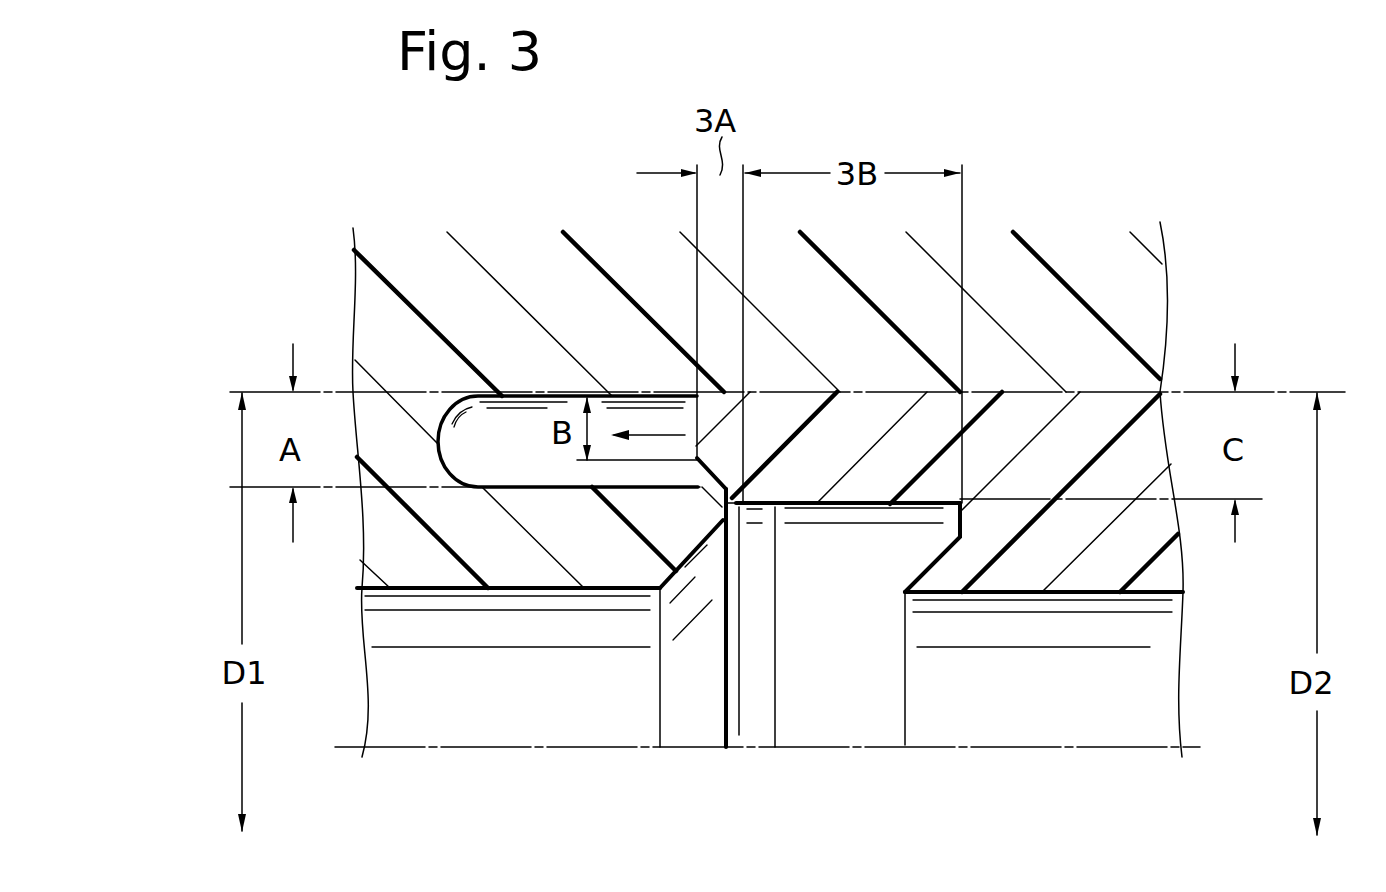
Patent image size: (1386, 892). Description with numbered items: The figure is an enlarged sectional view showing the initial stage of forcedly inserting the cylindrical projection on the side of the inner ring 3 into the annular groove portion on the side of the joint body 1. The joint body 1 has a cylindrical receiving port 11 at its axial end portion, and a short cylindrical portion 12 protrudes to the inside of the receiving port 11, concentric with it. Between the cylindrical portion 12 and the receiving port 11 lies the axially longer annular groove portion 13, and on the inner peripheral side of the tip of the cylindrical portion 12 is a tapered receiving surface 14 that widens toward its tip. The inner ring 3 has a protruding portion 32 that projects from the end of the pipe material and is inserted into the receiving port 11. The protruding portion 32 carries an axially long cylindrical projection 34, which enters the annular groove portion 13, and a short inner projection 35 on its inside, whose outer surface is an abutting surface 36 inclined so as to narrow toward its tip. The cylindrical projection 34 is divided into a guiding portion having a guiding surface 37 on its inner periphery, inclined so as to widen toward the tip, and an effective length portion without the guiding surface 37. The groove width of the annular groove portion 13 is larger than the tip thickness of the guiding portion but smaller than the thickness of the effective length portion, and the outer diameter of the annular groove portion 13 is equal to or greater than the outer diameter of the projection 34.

The joint body 1 is at (508, 258).
The inner ring 3 is at (1100, 385).
The receiving port 11 is at (850, 320).
The cylindrical portion 12 is at (603, 577).
The annular groove portion 13 is at (528, 462).
The tapered receiving surface 14 is at (693, 565).
The protruding portion 32 is at (1113, 550).
The cylindrical projection 34 is at (805, 478).
The inner projection 35 is at (930, 572).
The abutting surface 36 is at (938, 582).
The guiding surface 37 is at (698, 477).